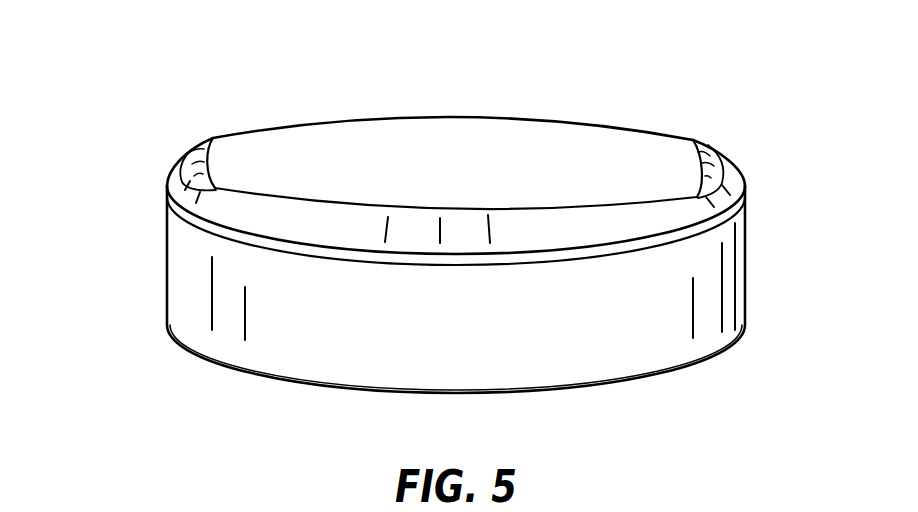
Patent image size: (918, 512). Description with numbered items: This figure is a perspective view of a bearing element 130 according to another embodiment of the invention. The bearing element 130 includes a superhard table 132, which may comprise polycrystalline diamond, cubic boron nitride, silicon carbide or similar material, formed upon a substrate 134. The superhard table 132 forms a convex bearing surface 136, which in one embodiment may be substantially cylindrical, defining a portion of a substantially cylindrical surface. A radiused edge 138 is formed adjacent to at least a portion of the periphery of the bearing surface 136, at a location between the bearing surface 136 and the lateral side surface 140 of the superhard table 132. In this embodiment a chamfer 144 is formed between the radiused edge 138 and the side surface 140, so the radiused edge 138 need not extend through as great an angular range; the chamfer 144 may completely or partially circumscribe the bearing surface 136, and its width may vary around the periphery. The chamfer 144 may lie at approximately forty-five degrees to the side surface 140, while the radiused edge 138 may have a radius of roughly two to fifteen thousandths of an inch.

The bearing element 130 is at (443, 246).
The superhard table 132 is at (410, 142).
The substrate 134 is at (755, 278).
The convex bearing surface 136 is at (447, 147).
The radiused edge 138 is at (190, 158).
The side surface 140 is at (747, 200).
The chamfer 144 is at (197, 199).